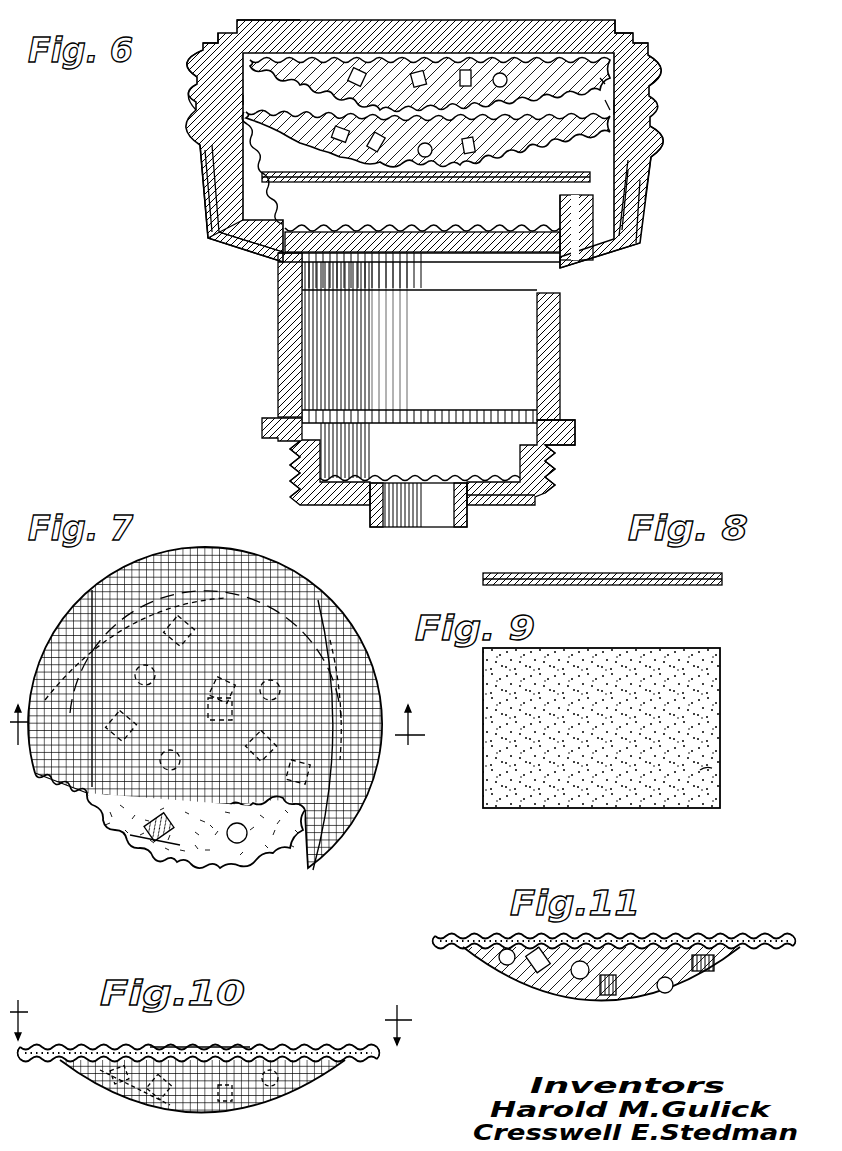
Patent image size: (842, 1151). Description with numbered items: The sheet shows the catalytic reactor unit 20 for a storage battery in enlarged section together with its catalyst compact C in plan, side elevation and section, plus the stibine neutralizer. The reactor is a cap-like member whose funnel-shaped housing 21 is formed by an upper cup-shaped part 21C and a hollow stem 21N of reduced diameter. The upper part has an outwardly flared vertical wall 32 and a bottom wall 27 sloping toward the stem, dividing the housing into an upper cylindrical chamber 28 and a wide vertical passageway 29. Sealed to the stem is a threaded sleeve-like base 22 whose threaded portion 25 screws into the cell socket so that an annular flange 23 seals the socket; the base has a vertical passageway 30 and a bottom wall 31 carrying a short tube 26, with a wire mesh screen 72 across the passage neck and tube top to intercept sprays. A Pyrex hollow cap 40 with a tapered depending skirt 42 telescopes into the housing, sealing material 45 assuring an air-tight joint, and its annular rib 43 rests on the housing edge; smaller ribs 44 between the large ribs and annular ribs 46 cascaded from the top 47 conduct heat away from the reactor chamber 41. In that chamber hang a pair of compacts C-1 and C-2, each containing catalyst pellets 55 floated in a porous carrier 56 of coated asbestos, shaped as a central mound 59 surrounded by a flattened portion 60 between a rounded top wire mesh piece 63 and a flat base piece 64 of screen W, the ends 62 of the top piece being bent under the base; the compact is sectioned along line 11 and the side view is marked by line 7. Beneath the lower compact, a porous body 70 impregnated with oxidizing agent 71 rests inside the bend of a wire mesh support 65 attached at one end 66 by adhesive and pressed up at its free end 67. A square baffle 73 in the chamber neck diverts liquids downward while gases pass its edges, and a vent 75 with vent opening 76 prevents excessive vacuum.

In FIG. 6, the catalytic reactor unit 20 is at (184, 75).
In FIG. 6, the funnel-shaped housing 21 is at (204, 240).
In FIG. 6, the upper cup-shaped part 21C is at (656, 180).
In FIG. 6, the hollow stem 21N is at (560, 386).
In FIG. 6, the sleeve-like base 22 is at (563, 418).
In FIG. 6, the annular flange 23 is at (265, 440).
In FIG. 6, the threaded portion 25 is at (295, 490).
In FIG. 6, the short tube 26 is at (370, 514).
In FIG. 6, the bottom wall 27 is at (642, 252).
In FIG. 6, the upper cylindrical chamber 28 is at (246, 246).
In FIG. 6, the vertical passageway 29 is at (302, 338).
In FIG. 6, the vertical passageway 30 is at (550, 462).
In FIG. 6, the bottom wall 31 is at (500, 505).
In FIG. 6, the vertical wall 32 is at (646, 203).
In FIG. 6, the hollow cap 40 is at (240, 21).
In FIG. 6, the reactor chamber 41 is at (636, 66).
In FIG. 6, the depending skirt 42 is at (220, 177).
In FIG. 6, the annular rib 43 is at (663, 73).
In FIG. 6, the smaller ribs 44 is at (656, 128).
In FIG. 6, the sealing material 45 is at (612, 107).
In FIG. 6, the annular ribs 46 is at (204, 46).
In FIG. 6, the top 47 is at (618, 22).
In FIG. 6, the catalyst pellets 55 is at (608, 106).
In FIG. 7, the catalyst pellets 55 is at (165, 848).
In FIG. 10, the catalyst pellets 55 is at (112, 1092).
In FIG. 11, the catalyst pellets 55 is at (530, 968).
In FIG. 6, the catalyst carrier 56 is at (598, 86).
In FIG. 7, the catalyst carrier 56 is at (145, 828).
In FIG. 11, the catalyst carrier 56 is at (606, 996).
In FIG. 7, the central mound 59 is at (232, 848).
In FIG. 11, the central mound 59 is at (645, 985).
In FIG. 11, the annular flattened portion 60 is at (500, 962).
In FIG. 7, the ends 62 is at (318, 852).
In FIG. 10, the ends 62 is at (62, 1047).
In FIG. 11, the ends 62 is at (470, 937).
In FIG. 7, the top wire mesh piece 63 is at (197, 866).
In FIG. 10, the top wire mesh piece 63 is at (270, 1100).
In FIG. 11, the top wire mesh piece 63 is at (558, 996).
In FIG. 7, the base wire mesh piece 64 is at (100, 796).
In FIG. 10, the base wire mesh piece 64 is at (222, 1025).
In FIG. 11, the base wire mesh piece 64 is at (590, 944).
In FIG. 6, the wire mesh screen support 65 is at (490, 255).
In FIG. 6, the end of support 66 is at (245, 114).
In FIG. 6, the free end of support 67 is at (652, 166).
In FIG. 6, the porous body 70 is at (339, 184).
In FIG. 8, the porous body 70 is at (722, 580).
In FIG. 9, the porous body 70 is at (720, 729).
In FIG. 6, the oxidizing agent 71 is at (447, 184).
In FIG. 8, the oxidizing agent 71 is at (580, 558).
In FIG. 9, the oxidizing agent 71 is at (700, 773).
In FIG. 6, the wire mesh screen 72 is at (482, 476).
In FIG. 6, the square baffle 73 is at (435, 255).
In FIG. 6, the vent 75 is at (560, 202).
In FIG. 6, the vent opening 76 is at (578, 268).
In FIG. 7, the catalytic compact C is at (352, 608).
In FIG. 6, the upper catalyst compact C-1 is at (306, 80).
In FIG. 6, the lower catalyst compact C-2 is at (428, 138).
In FIG. 7, the wire mesh screen W is at (342, 823).
In FIG. 10, the wire mesh screen W is at (382, 1057).
In FIG. 11, the wire mesh screen W is at (698, 994).
In FIG. 7, the section line 11— 11 is at (216, 735).
In FIG. 10, the section line 7 is at (211, 1013).